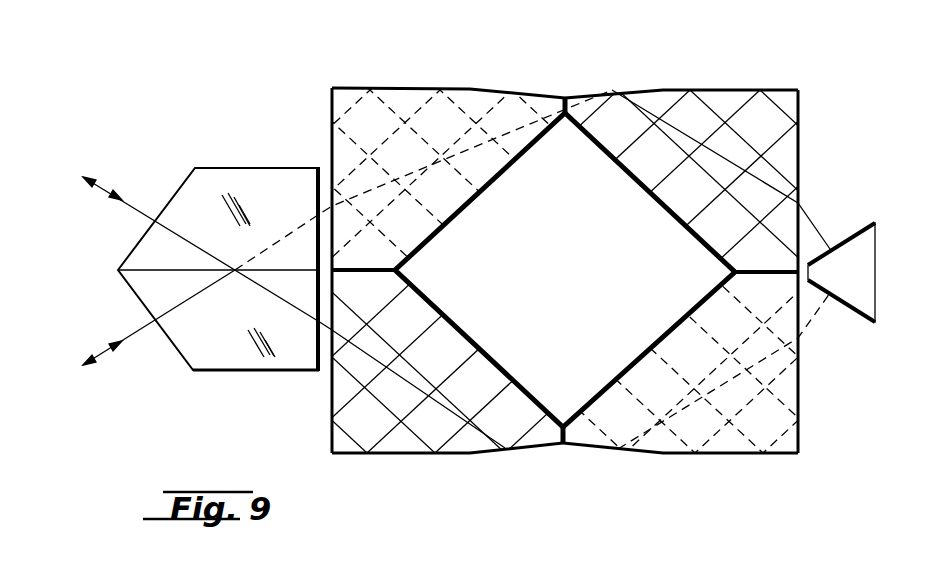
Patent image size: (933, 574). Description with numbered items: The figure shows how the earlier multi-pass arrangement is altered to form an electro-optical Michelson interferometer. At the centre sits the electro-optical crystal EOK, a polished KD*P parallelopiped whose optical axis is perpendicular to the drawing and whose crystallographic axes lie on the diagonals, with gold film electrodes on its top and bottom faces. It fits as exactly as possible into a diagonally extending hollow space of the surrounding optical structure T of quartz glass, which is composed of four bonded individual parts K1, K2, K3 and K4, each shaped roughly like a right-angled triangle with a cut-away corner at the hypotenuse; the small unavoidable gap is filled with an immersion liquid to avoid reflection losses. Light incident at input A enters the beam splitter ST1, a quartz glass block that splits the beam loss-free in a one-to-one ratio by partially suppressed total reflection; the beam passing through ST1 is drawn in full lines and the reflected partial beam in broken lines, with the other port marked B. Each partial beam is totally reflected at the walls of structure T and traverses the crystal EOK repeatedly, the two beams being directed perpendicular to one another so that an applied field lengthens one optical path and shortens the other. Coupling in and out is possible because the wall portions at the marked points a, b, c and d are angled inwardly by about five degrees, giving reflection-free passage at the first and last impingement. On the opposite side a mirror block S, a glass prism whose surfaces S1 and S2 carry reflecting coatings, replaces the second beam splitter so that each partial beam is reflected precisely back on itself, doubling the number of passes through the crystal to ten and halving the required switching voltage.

The surrounding external optical structure T is at (320, 97).
The angled partial surface point a is at (466, 84).
The angled partial surface point b is at (667, 88).
The angled partial surface point c is at (662, 456).
The angled partial surface point d is at (469, 456).
The electro-optical crystal EOK is at (565, 130).
The individual part of the optical structure K1 is at (355, 110).
The individual part of the optical structure K2 is at (730, 102).
The individual part of the optical structure K3 is at (713, 430).
The individual part of the optical structure K4 is at (373, 434).
The input A is at (284, 307).
The light beam B is at (336, 238).
The beam splitter ST1 is at (213, 357).
The mirror block S is at (862, 263).
The reflecting surface of the mirror block S1 is at (855, 228).
The reflecting surface of the mirror block S2 is at (852, 316).